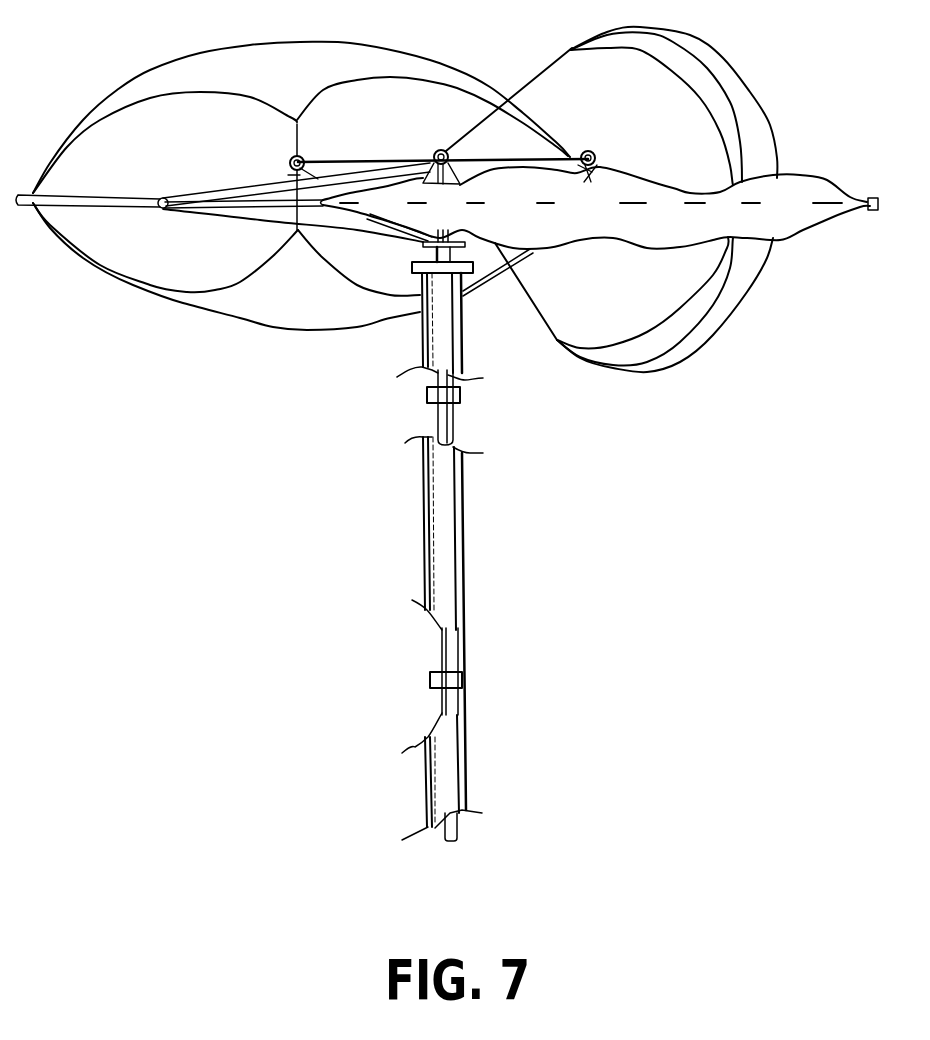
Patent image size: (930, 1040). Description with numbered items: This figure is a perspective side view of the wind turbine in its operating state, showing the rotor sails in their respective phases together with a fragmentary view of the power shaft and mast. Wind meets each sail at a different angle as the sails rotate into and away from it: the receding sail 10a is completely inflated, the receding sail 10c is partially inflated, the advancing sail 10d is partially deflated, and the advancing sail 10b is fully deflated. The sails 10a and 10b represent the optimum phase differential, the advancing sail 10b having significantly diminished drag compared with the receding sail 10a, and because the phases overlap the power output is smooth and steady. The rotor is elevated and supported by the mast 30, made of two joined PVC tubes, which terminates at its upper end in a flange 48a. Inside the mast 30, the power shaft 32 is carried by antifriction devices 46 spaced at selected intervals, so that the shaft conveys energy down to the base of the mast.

The receding sail 10a is at (737, 283).
The advancing sail 10b is at (260, 218).
The receding sail 10c is at (197, 70).
The advancing sail 10d is at (810, 192).
The mast 30 is at (445, 501).
The power shaft 32 is at (440, 422).
The antifriction devices 46 is at (428, 388).
The flange 48a is at (464, 265).